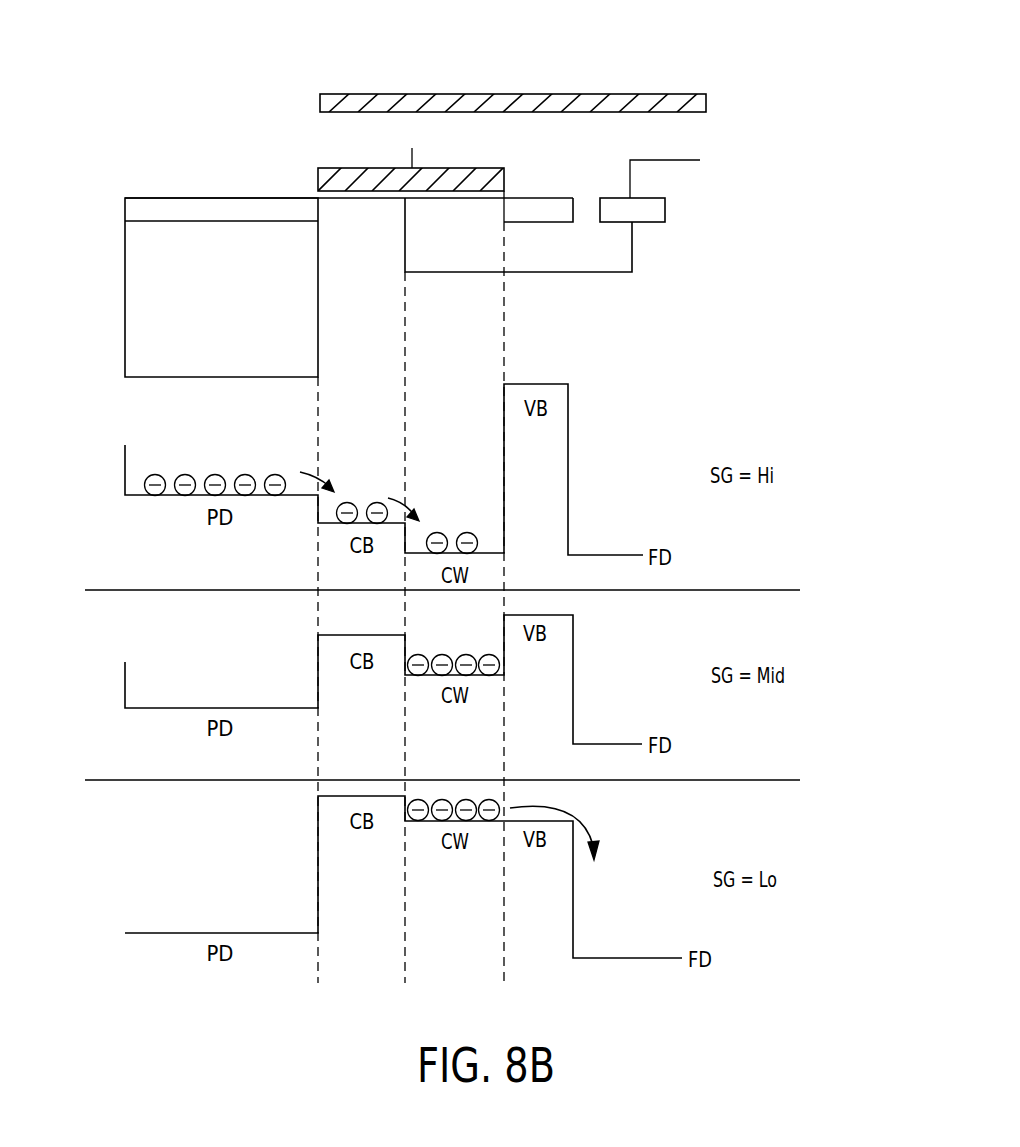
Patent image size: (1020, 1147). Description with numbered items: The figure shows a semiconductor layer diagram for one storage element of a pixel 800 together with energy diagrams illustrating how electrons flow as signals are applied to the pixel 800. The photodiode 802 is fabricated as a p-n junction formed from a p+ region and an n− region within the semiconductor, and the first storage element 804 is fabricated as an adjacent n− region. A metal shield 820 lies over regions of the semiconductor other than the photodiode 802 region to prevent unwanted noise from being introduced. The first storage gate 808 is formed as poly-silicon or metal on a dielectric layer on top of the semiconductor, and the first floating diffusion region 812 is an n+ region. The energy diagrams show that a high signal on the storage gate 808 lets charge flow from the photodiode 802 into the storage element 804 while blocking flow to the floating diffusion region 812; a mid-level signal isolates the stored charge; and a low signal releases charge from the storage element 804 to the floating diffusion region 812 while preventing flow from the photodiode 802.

The pixel 800 is at (100, 136).
The photodiode 802 is at (180, 378).
The first storage element 804 is at (405, 275).
The first storage gate 808 is at (405, 199).
The first floating diffusion region 812 is at (647, 224).
The metal shield 820 is at (510, 93).